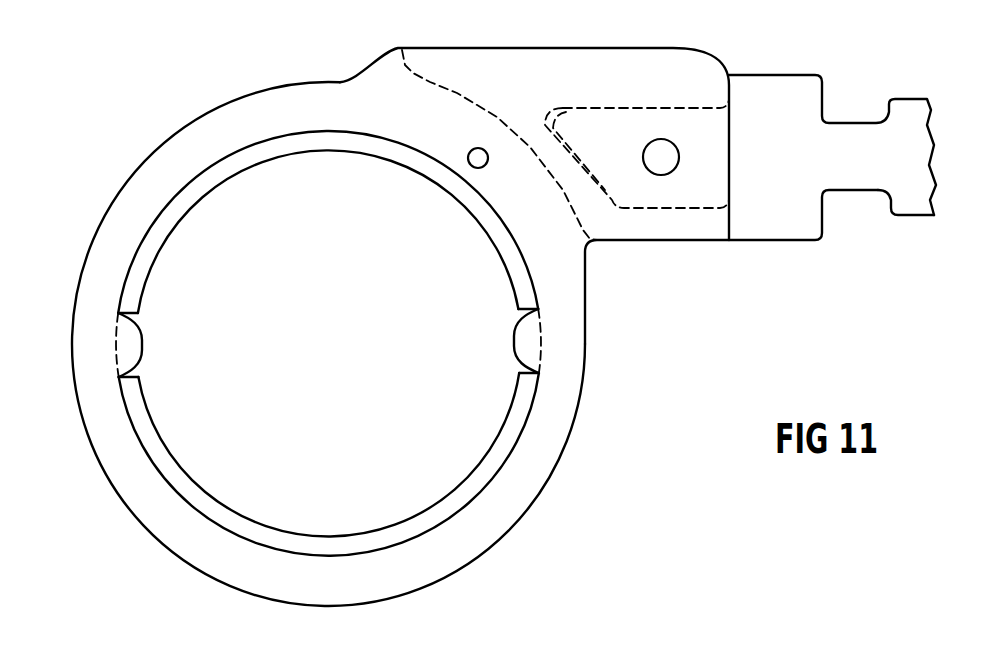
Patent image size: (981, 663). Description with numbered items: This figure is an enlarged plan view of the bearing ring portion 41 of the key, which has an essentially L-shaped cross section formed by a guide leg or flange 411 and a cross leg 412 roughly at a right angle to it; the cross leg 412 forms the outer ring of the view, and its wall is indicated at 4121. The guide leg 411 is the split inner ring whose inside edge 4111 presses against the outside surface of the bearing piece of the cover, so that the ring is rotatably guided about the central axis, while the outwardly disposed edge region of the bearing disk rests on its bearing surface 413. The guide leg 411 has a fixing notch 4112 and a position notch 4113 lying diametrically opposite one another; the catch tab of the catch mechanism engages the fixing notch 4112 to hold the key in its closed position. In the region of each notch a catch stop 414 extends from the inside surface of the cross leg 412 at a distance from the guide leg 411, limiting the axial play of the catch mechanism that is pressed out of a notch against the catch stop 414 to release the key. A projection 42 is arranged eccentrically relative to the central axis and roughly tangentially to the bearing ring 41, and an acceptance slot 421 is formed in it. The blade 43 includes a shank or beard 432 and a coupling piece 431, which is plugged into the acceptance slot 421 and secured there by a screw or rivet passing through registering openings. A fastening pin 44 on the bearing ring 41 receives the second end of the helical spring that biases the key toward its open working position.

The bearing ring portion 41 is at (425, 307).
The guide leg or flange 411 is at (328, 343).
The inside edge 4111 is at (183, 213).
The fixing notch 4112 is at (140, 373).
The position notch 4113 is at (510, 371).
The cross leg 412 is at (328, 333).
The outer ring wall 4121 is at (229, 116).
The bearing surface 413 is at (328, 343).
The catch stop 414 is at (142, 338).
The projection 42 is at (571, 176).
The acceptance slot 421 is at (674, 113).
The blade 43 is at (853, 162).
The coupling piece 431 is at (686, 108).
The shank or beard 432 is at (910, 203).
The fastening pin 44 is at (471, 166).